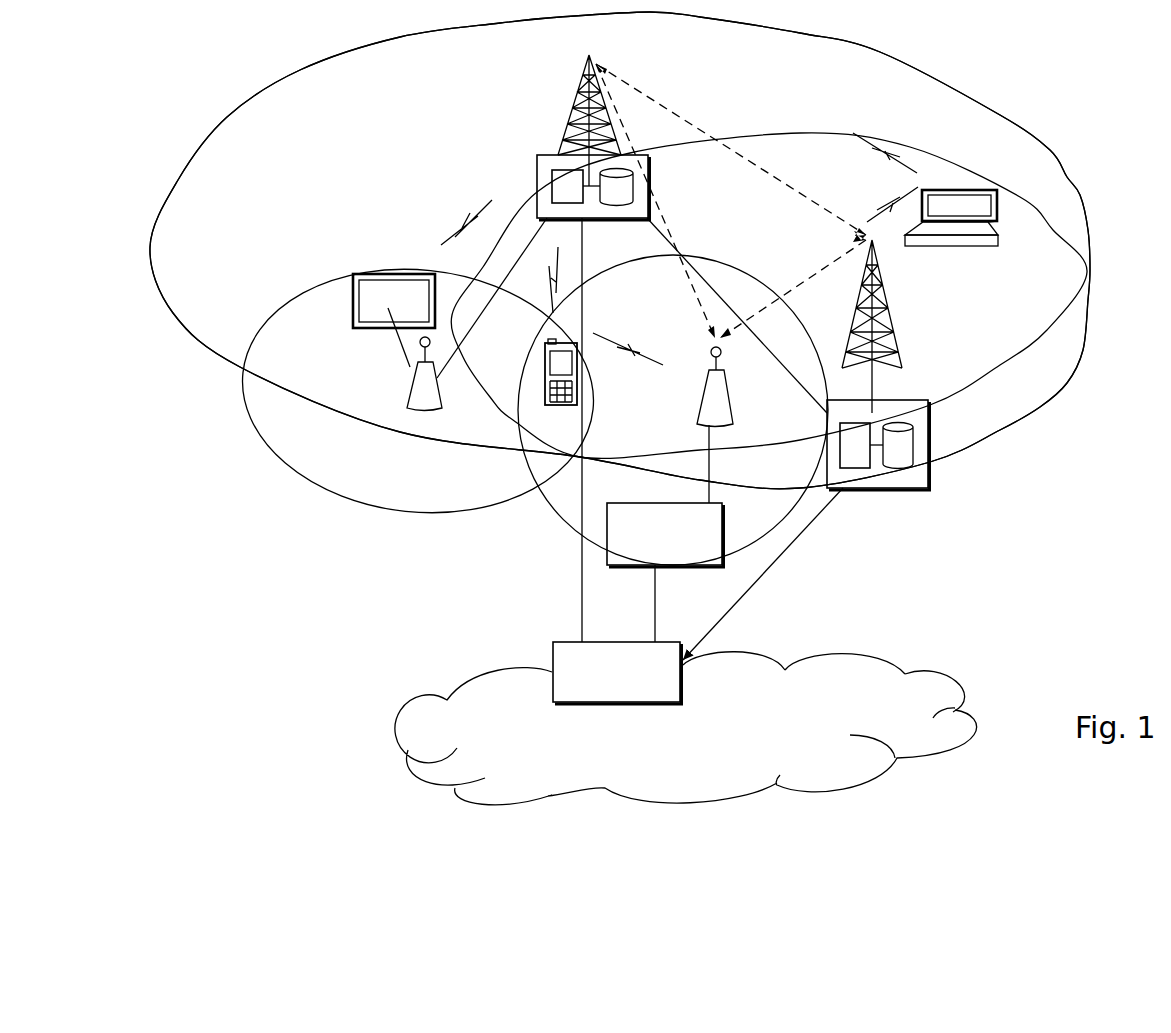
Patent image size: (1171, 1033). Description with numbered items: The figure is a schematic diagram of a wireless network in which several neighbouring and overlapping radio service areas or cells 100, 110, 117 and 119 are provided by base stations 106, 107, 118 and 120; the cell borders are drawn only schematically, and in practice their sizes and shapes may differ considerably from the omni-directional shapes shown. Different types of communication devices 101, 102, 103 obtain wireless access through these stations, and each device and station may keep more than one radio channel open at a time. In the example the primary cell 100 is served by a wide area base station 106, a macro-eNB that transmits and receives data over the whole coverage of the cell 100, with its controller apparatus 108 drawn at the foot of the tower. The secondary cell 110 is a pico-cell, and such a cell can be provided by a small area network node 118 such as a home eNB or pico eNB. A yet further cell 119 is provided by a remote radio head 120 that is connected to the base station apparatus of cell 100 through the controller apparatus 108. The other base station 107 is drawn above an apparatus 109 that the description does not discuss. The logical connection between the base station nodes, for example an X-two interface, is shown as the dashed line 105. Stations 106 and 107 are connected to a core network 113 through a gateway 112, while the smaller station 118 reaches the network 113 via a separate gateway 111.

The primary cell 100 is at (230, 103).
The communication device 101 is at (360, 277).
The communication device 102 is at (990, 232).
The communication device 103 is at (546, 370).
The X2 interface 105 is at (690, 122).
The wide area base station 106 is at (573, 114).
The base station 107 is at (880, 326).
The controller apparatus 108 is at (537, 171).
The base station equipment 109 is at (913, 473).
The secondary cell 110 is at (1032, 418).
The gateway 111 is at (617, 540).
The gateway 112 is at (555, 644).
The core network 113 is at (478, 715).
The cell 117 is at (756, 271).
The small area network node 118 is at (716, 403).
The further cell 119 is at (318, 496).
The remote radio head 120 is at (410, 373).